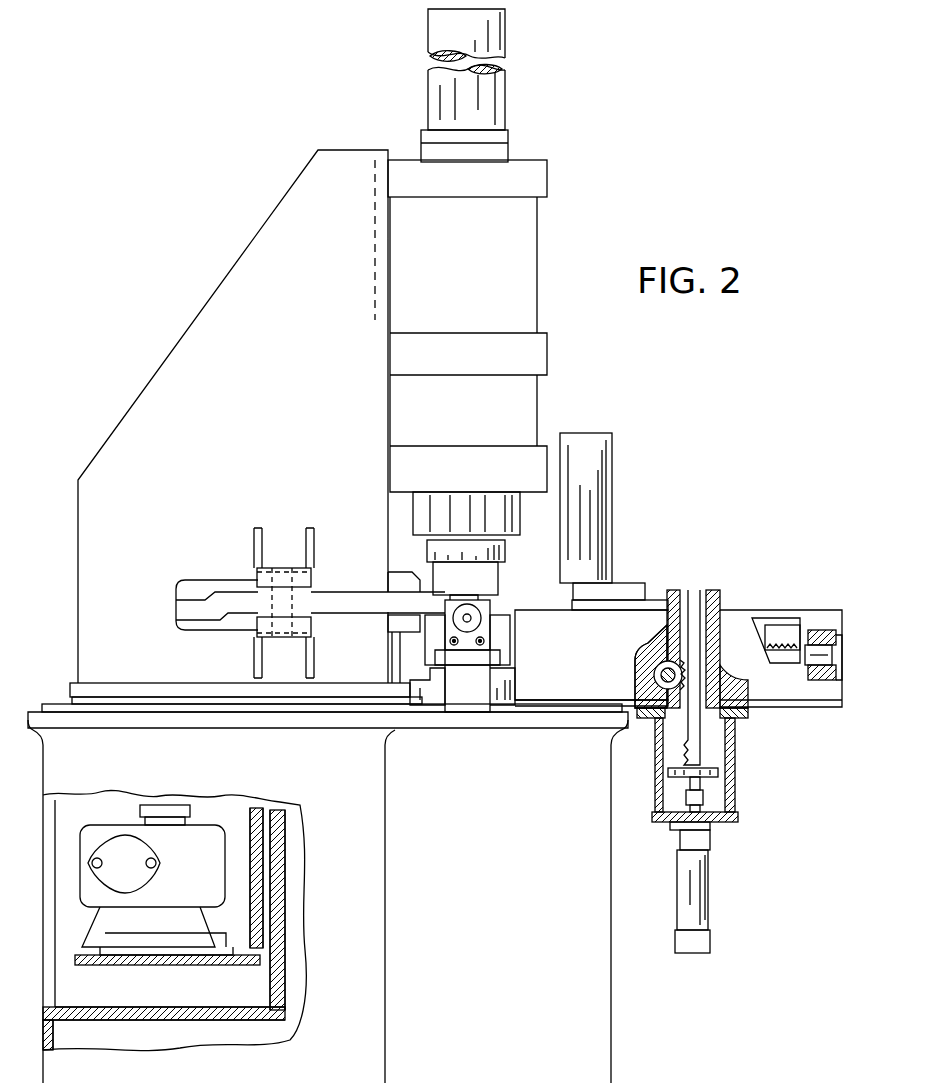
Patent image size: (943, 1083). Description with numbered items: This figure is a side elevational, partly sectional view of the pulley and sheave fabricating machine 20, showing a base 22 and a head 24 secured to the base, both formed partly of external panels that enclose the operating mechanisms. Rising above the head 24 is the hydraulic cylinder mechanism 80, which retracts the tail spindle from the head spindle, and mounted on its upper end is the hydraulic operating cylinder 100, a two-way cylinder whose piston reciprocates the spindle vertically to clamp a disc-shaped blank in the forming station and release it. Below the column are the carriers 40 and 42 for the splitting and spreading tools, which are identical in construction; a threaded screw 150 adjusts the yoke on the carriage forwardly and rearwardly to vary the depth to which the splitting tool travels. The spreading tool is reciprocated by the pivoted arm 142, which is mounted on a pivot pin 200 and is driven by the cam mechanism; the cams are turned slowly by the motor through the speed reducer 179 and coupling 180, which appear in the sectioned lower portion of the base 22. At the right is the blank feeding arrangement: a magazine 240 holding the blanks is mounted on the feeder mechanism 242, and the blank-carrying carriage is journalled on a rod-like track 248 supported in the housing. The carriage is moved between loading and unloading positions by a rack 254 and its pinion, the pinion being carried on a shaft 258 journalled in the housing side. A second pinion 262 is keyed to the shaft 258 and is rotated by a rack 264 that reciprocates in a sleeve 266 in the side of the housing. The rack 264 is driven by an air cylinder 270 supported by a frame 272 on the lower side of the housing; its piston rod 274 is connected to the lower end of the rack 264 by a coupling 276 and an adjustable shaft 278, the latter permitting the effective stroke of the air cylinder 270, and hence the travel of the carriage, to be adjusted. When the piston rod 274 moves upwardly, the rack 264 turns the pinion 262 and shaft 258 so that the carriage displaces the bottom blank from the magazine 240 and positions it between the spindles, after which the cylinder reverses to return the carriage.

The pulley and sheave fabricating machine 20 is at (176, 316).
The base 22 is at (372, 922).
The head 24 is at (286, 392).
The carrier 40 is at (466, 552).
The carrier 42 is at (500, 655).
The hydraulic cylinder mechanism 80 is at (474, 272).
The hydraulic operating cylinder 100 is at (440, 30).
The pivoted arm 142 is at (358, 600).
The screw 150 is at (470, 618).
The speed reducer 179 is at (195, 882).
The coupling 180 is at (160, 810).
The pivot pin 200 is at (278, 580).
The magazine 240 is at (603, 481).
The feeder mechanism 242 is at (766, 606).
The rod-like track 248 is at (818, 658).
The rack 254 is at (776, 640).
The shaft 258 is at (662, 668).
The pinion 262 is at (655, 678).
The rack 264 is at (700, 740).
The sleeve 266 is at (700, 600).
The air cylinder 270 is at (697, 887).
The frame 272 is at (735, 805).
The piston rod 274 is at (693, 824).
The coupling 276 is at (690, 798).
The adjustable shaft 278 is at (685, 777).